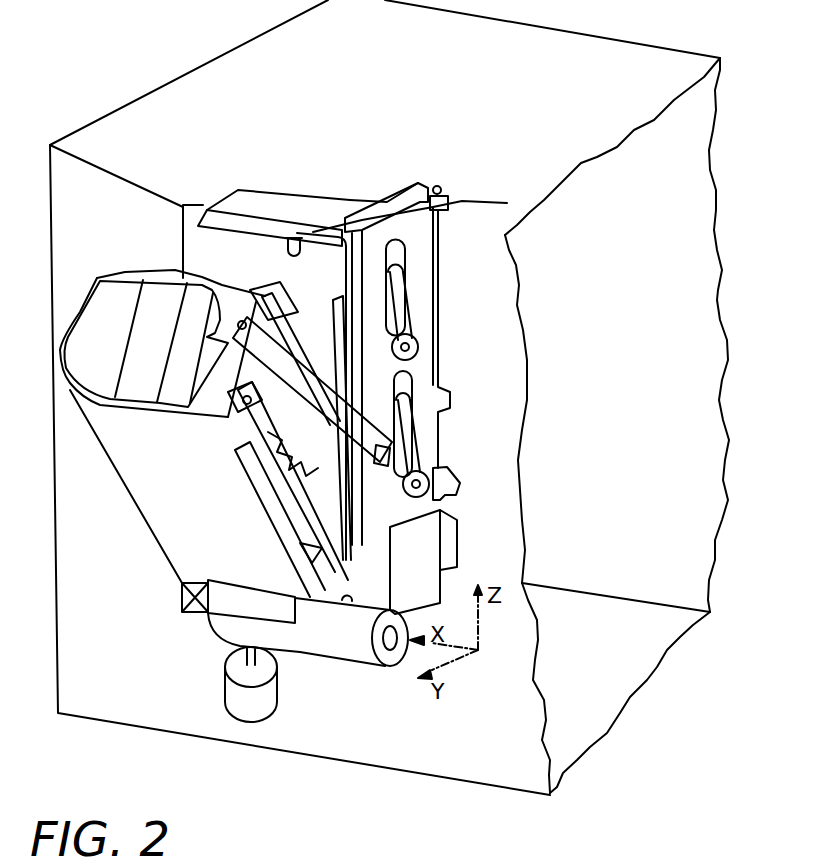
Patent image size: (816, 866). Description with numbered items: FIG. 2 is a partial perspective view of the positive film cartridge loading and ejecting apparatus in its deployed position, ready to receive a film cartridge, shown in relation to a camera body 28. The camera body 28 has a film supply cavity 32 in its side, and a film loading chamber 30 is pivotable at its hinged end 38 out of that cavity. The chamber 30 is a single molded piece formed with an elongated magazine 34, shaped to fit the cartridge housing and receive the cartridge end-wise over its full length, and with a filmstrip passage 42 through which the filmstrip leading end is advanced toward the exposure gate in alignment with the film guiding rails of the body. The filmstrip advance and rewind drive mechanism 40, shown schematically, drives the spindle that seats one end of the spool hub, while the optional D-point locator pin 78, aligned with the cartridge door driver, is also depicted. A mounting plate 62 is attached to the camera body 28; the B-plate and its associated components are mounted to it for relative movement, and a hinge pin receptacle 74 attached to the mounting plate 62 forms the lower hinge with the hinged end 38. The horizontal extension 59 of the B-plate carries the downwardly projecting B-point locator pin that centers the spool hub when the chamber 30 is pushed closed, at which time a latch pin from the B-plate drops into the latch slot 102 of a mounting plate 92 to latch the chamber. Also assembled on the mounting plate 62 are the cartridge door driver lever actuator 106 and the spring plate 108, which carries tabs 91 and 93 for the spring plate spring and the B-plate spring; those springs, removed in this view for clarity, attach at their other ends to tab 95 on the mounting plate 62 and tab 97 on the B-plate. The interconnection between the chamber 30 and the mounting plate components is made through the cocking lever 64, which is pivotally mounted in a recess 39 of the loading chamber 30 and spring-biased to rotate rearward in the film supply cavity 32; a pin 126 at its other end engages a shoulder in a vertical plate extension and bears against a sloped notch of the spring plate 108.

The camera body 28 is at (634, 330).
The film loading chamber 30 is at (134, 531).
The film supply cavity 32 is at (185, 231).
The magazine 34 is at (93, 320).
The hinged end 38 is at (222, 628).
The recess 39 is at (212, 423).
The filmstrip advance and rewind drive mechanism 40 is at (240, 698).
The filmstrip passage 42 is at (266, 472).
The horizontal extension 59 is at (240, 203).
The mounting plate 62 is at (335, 298).
The cocking lever 64 is at (246, 440).
The hinge pin receptacle 74 is at (360, 652).
The D-point locator pin 78 is at (292, 238).
The tab 91 is at (440, 405).
The mounting plate 92 is at (226, 318).
The tab 93 is at (456, 477).
The tab 95 is at (448, 160).
The tab 97 is at (488, 192).
The latch slot 102 is at (258, 272).
The cartridge door driver lever actuator 106 is at (467, 533).
The spring plate 108 is at (458, 320).
The pin 126 is at (385, 452).